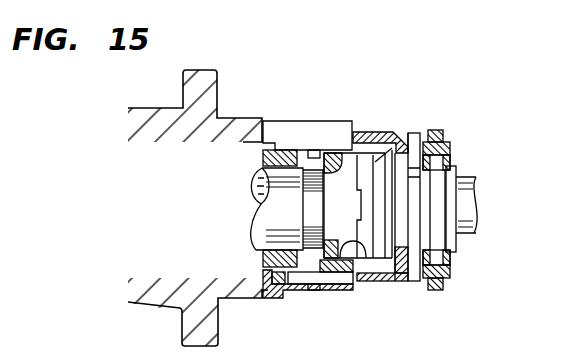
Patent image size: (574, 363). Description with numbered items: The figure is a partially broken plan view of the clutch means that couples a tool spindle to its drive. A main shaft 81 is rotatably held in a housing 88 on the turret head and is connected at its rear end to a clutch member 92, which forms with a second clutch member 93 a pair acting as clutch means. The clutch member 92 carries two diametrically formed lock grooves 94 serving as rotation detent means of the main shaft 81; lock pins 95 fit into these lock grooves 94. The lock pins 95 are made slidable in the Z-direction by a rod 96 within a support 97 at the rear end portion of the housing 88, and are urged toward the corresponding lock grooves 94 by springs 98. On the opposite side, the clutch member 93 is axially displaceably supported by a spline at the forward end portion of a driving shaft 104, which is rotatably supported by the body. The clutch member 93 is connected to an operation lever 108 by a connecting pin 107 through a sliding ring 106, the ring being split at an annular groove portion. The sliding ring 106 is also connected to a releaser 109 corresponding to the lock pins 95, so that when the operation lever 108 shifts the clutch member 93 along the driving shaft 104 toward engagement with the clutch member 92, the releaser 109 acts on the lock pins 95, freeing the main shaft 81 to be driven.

The housing 88 is at (167, 110).
The main shaft 81 is at (253, 208).
The spring 98 is at (282, 286).
The support 97 is at (343, 127).
The rod 96 is at (337, 284).
The lock pin 95 is at (313, 152).
The lock groove 94 is at (331, 150).
The clutch member 92 is at (389, 132).
The releaser 109 is at (399, 282).
The clutch member 93 is at (418, 133).
The operation lever 108 is at (446, 147).
The sliding ring 106 is at (450, 160).
The connecting pin 107 is at (450, 268).
The driving shaft 104 is at (478, 210).